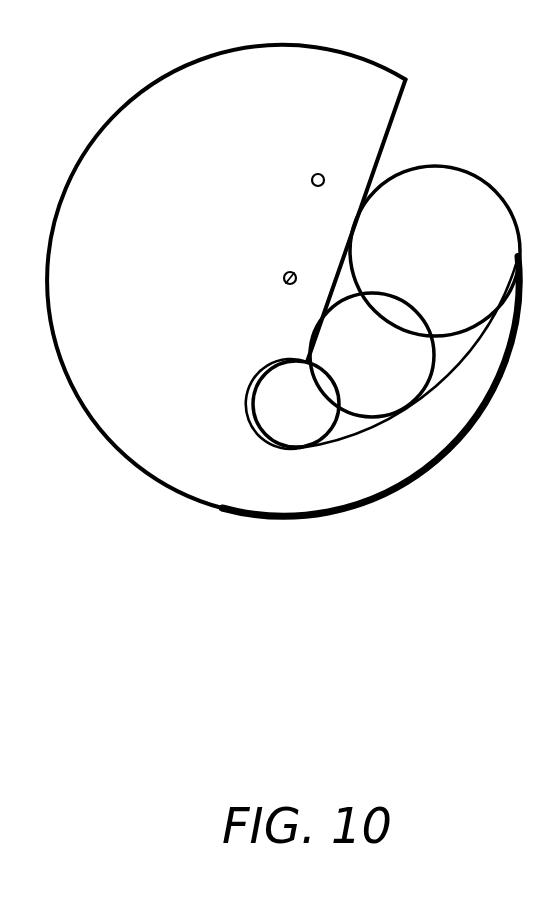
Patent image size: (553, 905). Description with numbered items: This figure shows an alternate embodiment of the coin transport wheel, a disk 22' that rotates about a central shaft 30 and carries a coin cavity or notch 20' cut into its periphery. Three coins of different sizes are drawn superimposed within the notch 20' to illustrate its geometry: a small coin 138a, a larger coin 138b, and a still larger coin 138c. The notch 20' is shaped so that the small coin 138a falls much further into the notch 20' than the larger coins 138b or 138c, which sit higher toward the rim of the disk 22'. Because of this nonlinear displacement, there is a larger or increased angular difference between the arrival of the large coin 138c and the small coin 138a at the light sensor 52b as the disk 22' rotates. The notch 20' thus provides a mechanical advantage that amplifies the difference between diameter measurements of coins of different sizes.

The notch 20' is at (282, 276).
The disk 22' is at (338, 402).
The shaft 30 is at (284, 280).
The light sensor 52b is at (312, 181).
The small coin 138a is at (251, 394).
The larger coin 138b is at (433, 357).
The large coin 138c is at (503, 193).